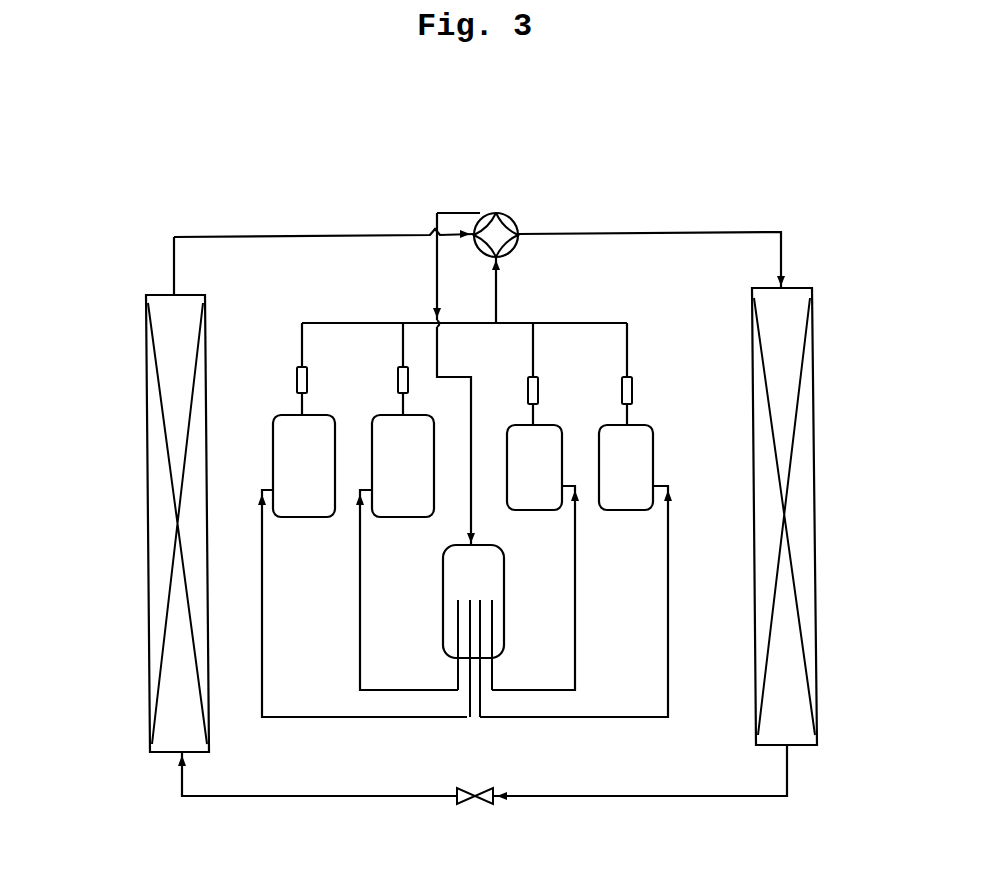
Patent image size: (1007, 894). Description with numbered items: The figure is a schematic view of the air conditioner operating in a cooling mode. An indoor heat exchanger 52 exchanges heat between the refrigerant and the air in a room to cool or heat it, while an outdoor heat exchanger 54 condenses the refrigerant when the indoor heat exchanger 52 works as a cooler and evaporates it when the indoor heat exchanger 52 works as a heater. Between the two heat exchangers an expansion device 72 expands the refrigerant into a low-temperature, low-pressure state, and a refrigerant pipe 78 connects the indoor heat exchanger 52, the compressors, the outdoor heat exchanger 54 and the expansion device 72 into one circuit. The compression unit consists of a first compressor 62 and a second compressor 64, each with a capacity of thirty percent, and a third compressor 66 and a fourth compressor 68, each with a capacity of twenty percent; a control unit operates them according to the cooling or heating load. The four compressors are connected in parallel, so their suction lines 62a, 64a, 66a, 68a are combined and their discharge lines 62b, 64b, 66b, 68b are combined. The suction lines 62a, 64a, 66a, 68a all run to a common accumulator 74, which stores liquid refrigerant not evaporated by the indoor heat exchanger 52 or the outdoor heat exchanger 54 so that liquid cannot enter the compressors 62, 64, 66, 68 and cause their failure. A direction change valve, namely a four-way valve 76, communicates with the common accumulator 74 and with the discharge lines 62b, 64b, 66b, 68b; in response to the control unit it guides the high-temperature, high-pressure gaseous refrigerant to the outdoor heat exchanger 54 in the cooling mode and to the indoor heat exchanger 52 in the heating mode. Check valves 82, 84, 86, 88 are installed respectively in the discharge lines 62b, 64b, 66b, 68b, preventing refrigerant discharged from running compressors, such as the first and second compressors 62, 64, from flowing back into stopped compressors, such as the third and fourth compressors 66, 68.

The indoor heat exchanger 52 is at (147, 525).
The outdoor heat exchanger 54 is at (817, 516).
The first compressor 62 is at (316, 477).
The second compressor 64 is at (415, 477).
The third compressor 66 is at (547, 482).
The fourth compressor 68 is at (638, 482).
The suction line 62a is at (262, 628).
The suction line 64a is at (360, 628).
The suction line 66a is at (575, 628).
The suction line 68a is at (668, 628).
The discharge line 62b is at (302, 348).
The discharge line 64b is at (403, 348).
The discharge line 66b is at (533, 350).
The discharge line 68b is at (627, 350).
The expansion device 72 is at (480, 805).
The common accumulator 74 is at (504, 588).
The 4-way valve 76 is at (508, 214).
The refrigerant pipe 78 is at (655, 232).
The check valve 82 is at (297, 382).
The check valve 84 is at (398, 382).
The check valve 86 is at (538, 392).
The check valve 88 is at (632, 392).